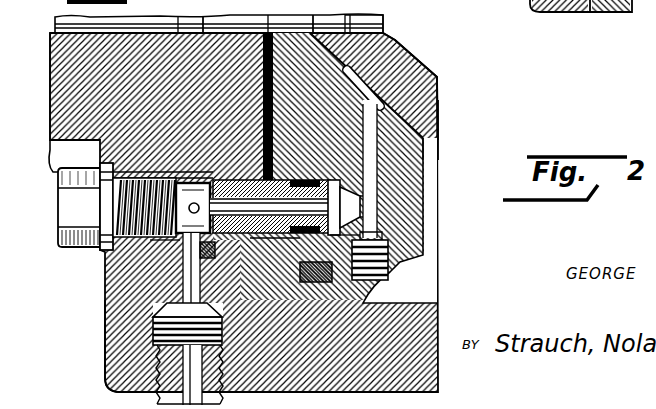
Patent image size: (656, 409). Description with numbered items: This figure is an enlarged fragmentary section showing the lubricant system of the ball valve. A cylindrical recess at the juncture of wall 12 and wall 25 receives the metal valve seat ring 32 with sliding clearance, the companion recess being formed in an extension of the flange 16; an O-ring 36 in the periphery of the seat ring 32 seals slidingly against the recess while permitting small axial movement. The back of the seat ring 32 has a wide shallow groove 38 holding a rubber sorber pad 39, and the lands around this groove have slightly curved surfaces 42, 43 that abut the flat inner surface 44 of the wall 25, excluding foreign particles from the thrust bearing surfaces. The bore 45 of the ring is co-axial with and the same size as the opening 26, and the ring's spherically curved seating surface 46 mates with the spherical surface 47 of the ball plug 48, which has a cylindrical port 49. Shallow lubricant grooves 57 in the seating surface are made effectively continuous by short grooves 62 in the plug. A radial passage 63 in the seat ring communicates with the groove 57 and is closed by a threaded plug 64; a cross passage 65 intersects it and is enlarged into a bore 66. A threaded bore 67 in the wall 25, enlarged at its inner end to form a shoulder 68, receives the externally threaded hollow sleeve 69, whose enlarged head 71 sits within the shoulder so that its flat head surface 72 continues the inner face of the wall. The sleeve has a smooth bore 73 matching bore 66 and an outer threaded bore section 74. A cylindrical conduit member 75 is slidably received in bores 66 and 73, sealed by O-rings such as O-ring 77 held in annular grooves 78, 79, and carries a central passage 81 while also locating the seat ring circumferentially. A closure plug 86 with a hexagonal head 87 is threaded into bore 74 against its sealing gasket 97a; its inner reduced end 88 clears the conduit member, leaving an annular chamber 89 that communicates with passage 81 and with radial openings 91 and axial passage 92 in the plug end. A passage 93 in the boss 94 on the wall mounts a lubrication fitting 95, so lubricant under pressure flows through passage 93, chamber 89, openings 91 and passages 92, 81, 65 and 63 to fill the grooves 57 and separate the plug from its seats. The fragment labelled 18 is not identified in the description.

The wall 12 is at (437, 378).
The flange 16 is at (305, 243).
The outlet fitting 18 is at (595, 13).
The wall 25 is at (203, 33).
The opening 26 is at (178, 33).
The valve seat ring 32 is at (425, 185).
The sealing O-ring 36 is at (322, 284).
The back surface groove 38 is at (280, 106).
The sorber pad 39 is at (272, 62).
The curved surface 42 is at (255, 44).
The curved surface 43 is at (209, 342).
The flat inner surface 44 is at (277, 80).
The bore 45 is at (287, 33).
The seating surface 46 is at (440, 126).
The mating surface 47 is at (432, 150).
The ball plug 48 is at (437, 85).
The cylindrical port 49 is at (388, 22).
The lubricant groove 57 is at (352, 82).
The short groove 62 is at (375, 80).
The radial passage 63 is at (380, 150).
The threaded plug 64 is at (385, 278).
The cross passage 65 is at (378, 190).
The bore 66 is at (272, 178).
The threaded bore 67 is at (156, 143).
The shoulder 68 is at (248, 132).
The hollow sleeve 69 is at (240, 150).
The enlarged head 71 is at (286, 133).
The head surface 72 is at (285, 152).
The smooth bore 73 is at (258, 242).
The threaded bore section 74 is at (142, 160).
The conduit member 75 is at (345, 180).
The sealing O-ring 77 is at (238, 283).
The annular groove 78 is at (345, 201).
The annular groove 79 is at (212, 182).
The central passage 81 is at (270, 199).
The closure plug 86 is at (100, 250).
The hexagonal head 87 is at (66, 244).
The inner reduced end 88 is at (166, 175).
The annular chamber 89 is at (225, 175).
The radial opening 91 is at (205, 258).
The axial passage 92 is at (180, 255).
The passage 93 is at (182, 300).
The boss 94 is at (118, 348).
The lubrication fitting 95 is at (228, 381).
The sealing gasket 97a is at (66, 156).